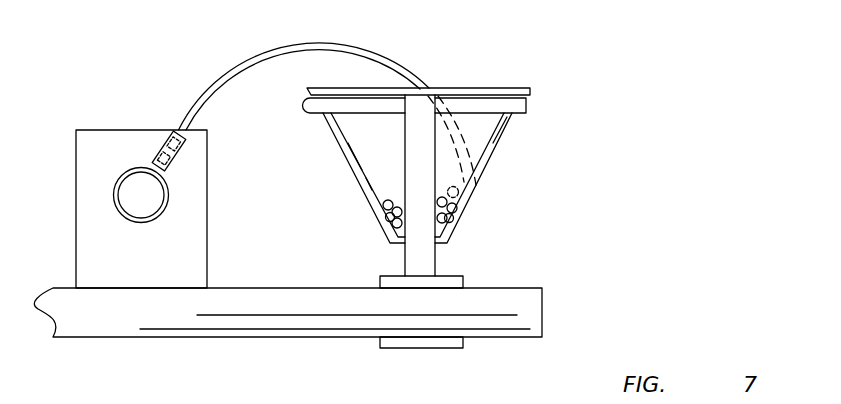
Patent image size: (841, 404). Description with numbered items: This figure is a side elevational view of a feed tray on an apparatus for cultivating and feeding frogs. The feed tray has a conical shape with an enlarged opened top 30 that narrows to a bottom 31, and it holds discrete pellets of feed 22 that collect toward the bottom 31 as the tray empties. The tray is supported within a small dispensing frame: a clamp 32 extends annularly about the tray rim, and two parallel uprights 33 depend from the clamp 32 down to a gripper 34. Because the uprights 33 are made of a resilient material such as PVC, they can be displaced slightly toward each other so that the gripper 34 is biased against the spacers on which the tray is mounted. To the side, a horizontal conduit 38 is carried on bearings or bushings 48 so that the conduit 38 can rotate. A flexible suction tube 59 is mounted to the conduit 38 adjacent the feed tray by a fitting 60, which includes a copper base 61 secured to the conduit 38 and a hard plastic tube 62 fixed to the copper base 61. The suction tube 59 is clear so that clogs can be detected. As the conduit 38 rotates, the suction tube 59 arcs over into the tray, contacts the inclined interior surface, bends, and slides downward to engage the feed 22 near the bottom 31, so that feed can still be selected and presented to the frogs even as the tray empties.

The balls 22 is at (452, 203).
The enlarged opened top 30 is at (466, 88).
The bottom 31 is at (376, 210).
The clamp 32 is at (518, 107).
The uprights 33 is at (405, 261).
The gripper 34 is at (422, 341).
The conduit 38 is at (140, 221).
The bearings or bushings 48 is at (99, 130).
The suction tube 59 is at (325, 42).
The fitting 60 is at (153, 144).
The copper base 61 is at (167, 172).
The hard plastic tube 62 is at (181, 154).